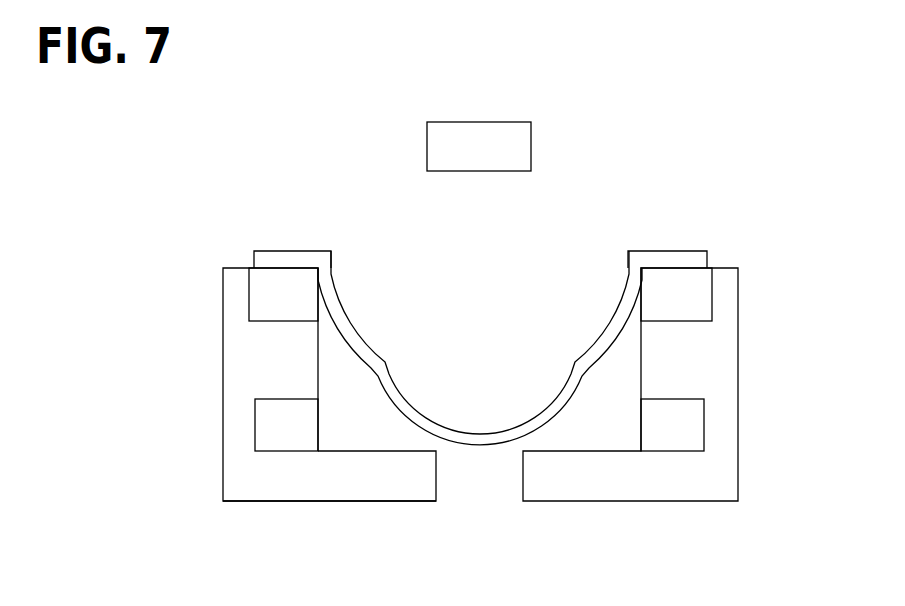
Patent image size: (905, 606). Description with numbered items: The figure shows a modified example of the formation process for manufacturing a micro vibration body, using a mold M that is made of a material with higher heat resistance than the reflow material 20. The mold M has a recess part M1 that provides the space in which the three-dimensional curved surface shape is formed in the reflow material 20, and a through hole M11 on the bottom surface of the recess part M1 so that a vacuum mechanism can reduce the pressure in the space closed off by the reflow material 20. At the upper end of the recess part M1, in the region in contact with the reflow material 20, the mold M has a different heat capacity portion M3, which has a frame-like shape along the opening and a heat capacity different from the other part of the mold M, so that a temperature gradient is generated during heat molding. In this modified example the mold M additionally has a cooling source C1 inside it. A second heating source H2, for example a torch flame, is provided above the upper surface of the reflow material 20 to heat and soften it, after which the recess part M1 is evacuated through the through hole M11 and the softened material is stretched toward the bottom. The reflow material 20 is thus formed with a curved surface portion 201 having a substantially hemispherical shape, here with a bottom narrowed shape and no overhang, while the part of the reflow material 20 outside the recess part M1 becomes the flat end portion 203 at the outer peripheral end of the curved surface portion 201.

The second heating source H2 is at (517, 150).
The mold M is at (720, 367).
The recess part M1 is at (318, 365).
The through hole M11 is at (437, 479).
The different heat capacity portion M3 is at (277, 296).
The cooling source C1 is at (277, 427).
The reflow material 20 is at (703, 250).
The curved surface portion 201 is at (365, 346).
The end portion 203 is at (293, 258).